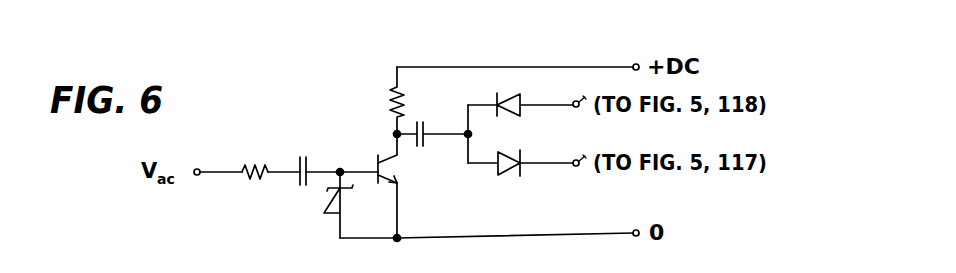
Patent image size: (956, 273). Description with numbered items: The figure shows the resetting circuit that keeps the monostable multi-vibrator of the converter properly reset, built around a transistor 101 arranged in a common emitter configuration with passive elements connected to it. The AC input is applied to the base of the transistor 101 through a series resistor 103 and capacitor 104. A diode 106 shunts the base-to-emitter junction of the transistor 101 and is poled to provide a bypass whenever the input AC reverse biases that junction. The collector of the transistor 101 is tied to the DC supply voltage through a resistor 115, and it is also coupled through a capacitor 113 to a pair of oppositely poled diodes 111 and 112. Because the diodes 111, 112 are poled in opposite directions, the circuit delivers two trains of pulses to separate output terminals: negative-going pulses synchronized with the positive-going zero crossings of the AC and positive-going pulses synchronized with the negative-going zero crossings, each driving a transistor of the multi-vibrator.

The transistor 101 is at (378, 160).
The resistor 103 is at (250, 160).
The capacitor 104 is at (304, 157).
The diode 106 is at (328, 206).
The diode 111 is at (530, 79).
The diode 112 is at (530, 134).
The capacitor 113 is at (427, 137).
The resistor 115 is at (405, 94).